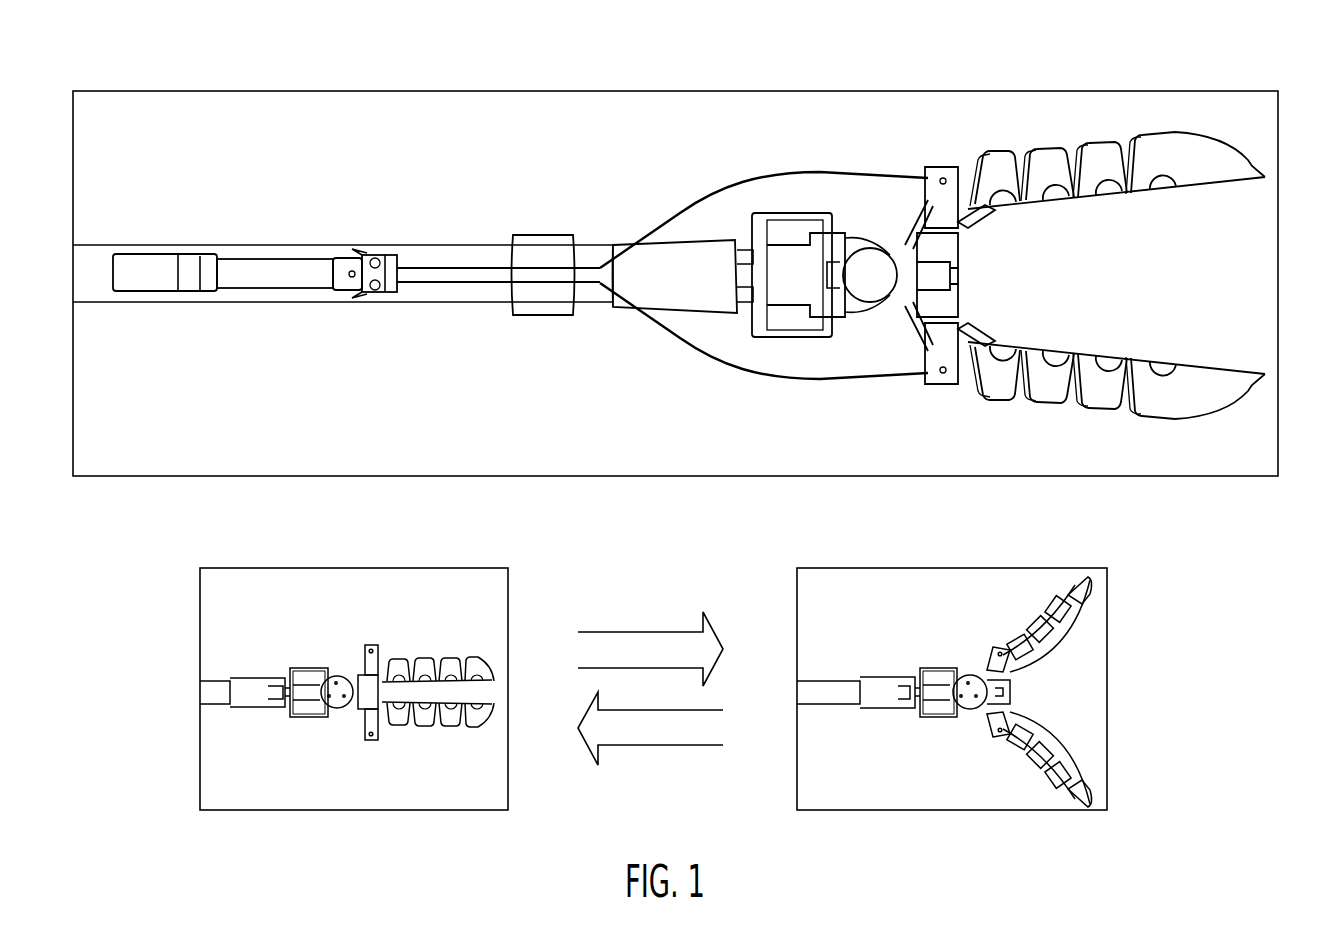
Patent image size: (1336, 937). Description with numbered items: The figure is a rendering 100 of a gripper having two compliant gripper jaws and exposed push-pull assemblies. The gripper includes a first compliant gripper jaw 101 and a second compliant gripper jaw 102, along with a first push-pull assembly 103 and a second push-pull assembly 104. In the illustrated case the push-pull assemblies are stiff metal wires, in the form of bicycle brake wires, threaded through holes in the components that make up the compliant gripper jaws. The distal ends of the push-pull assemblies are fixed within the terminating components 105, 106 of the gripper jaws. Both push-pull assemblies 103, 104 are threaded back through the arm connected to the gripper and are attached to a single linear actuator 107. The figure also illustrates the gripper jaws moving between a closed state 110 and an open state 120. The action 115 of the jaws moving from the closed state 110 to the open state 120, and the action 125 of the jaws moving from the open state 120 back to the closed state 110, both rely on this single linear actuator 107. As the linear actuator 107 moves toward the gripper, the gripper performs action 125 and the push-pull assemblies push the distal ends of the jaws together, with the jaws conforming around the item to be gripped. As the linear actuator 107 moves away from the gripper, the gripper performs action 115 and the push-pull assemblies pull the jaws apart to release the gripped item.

The rendering 100 is at (195, 81).
The first compliant gripper jaw 101 is at (1048, 150).
The second compliant gripper jaw 102 is at (1083, 400).
The first push-pull assembly 103 is at (805, 168).
The second push-pull assembly 104 is at (800, 378).
The terminating component of gripper jaw 105 is at (1215, 150).
The terminating component of gripper jaw 106 is at (1212, 402).
The linear actuator 107 is at (327, 282).
The closed state 110 is at (260, 647).
The action 115 is at (660, 663).
The open state 120 is at (860, 647).
The action 125 is at (660, 743).